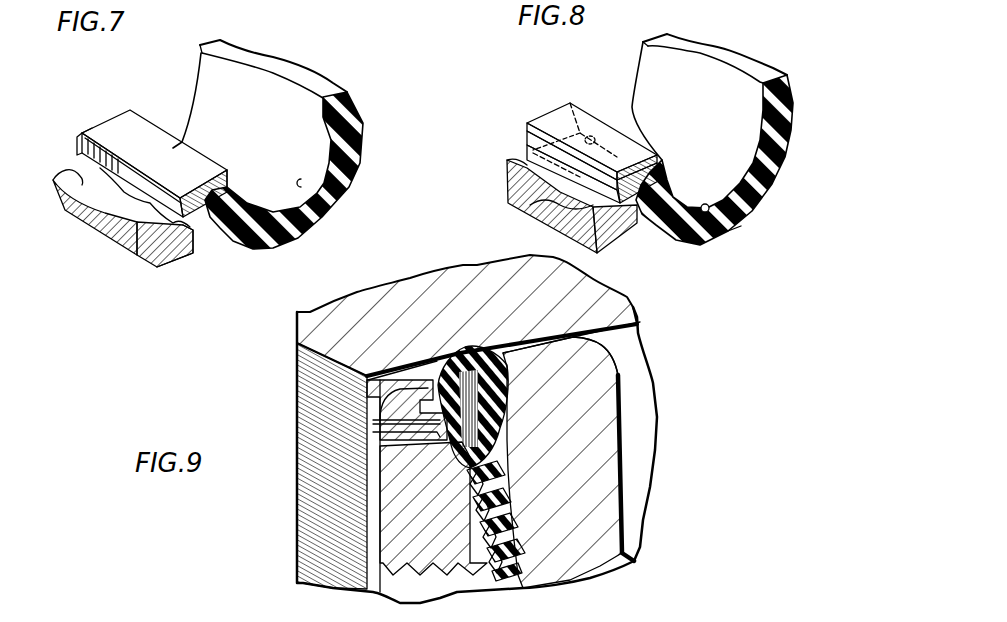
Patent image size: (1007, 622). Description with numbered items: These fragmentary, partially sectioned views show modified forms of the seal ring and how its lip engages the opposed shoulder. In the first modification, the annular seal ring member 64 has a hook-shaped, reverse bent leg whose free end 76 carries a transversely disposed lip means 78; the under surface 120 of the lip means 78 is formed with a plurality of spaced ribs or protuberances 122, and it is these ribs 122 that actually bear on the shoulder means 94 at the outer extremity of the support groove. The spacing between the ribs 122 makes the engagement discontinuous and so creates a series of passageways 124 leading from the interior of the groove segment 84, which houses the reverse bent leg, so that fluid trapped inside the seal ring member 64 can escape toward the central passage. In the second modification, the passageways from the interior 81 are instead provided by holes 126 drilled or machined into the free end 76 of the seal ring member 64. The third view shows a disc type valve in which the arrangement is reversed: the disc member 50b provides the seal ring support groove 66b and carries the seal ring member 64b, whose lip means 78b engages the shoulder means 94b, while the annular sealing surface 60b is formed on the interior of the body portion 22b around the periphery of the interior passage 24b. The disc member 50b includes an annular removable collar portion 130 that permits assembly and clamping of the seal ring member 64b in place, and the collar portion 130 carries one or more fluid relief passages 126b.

In FIG. 7, the seal ring member 64 is at (354, 127).
In FIG. 8, the seal ring member 64 is at (792, 117).
In FIG. 7, the lip means 78 is at (170, 167).
In FIG. 8, the lip means 78 is at (552, 190).
In FIG. 7, the under surface 120 is at (110, 152).
In FIG. 7, the second segment of seal ring support groove 84 is at (90, 128).
In FIG. 7, the free end 76 is at (230, 181).
In FIG. 7, the interior 81 is at (305, 183).
In FIG. 8, the interior 81 is at (729, 222).
In FIG. 7, the ribs or protuberances 122 is at (97, 236).
In FIG. 7, the shoulder means 94 is at (143, 250).
In FIG. 8, the shoulder means 94 is at (505, 163).
In FIG. 7, the passageways 124 is at (185, 245).
In FIG. 8, the holes 126 is at (572, 112).
In FIG. 9, the annular sealing surface 60b is at (407, 368).
In FIG. 9, the body portion 22b is at (635, 312).
In FIG. 9, the interior passage 24b is at (638, 347).
In FIG. 9, the seal ring member 64b is at (507, 398).
In FIG. 9, the disc member 50b is at (607, 477).
In FIG. 9, the shoulder means 94b is at (297, 397).
In FIG. 9, the lip means 78b is at (368, 432).
In FIG. 9, the fluid relief passages 126b is at (443, 437).
In FIG. 9, the seal ring support groove 66b is at (367, 462).
In FIG. 9, the annular removable collar portion 130 is at (390, 508).